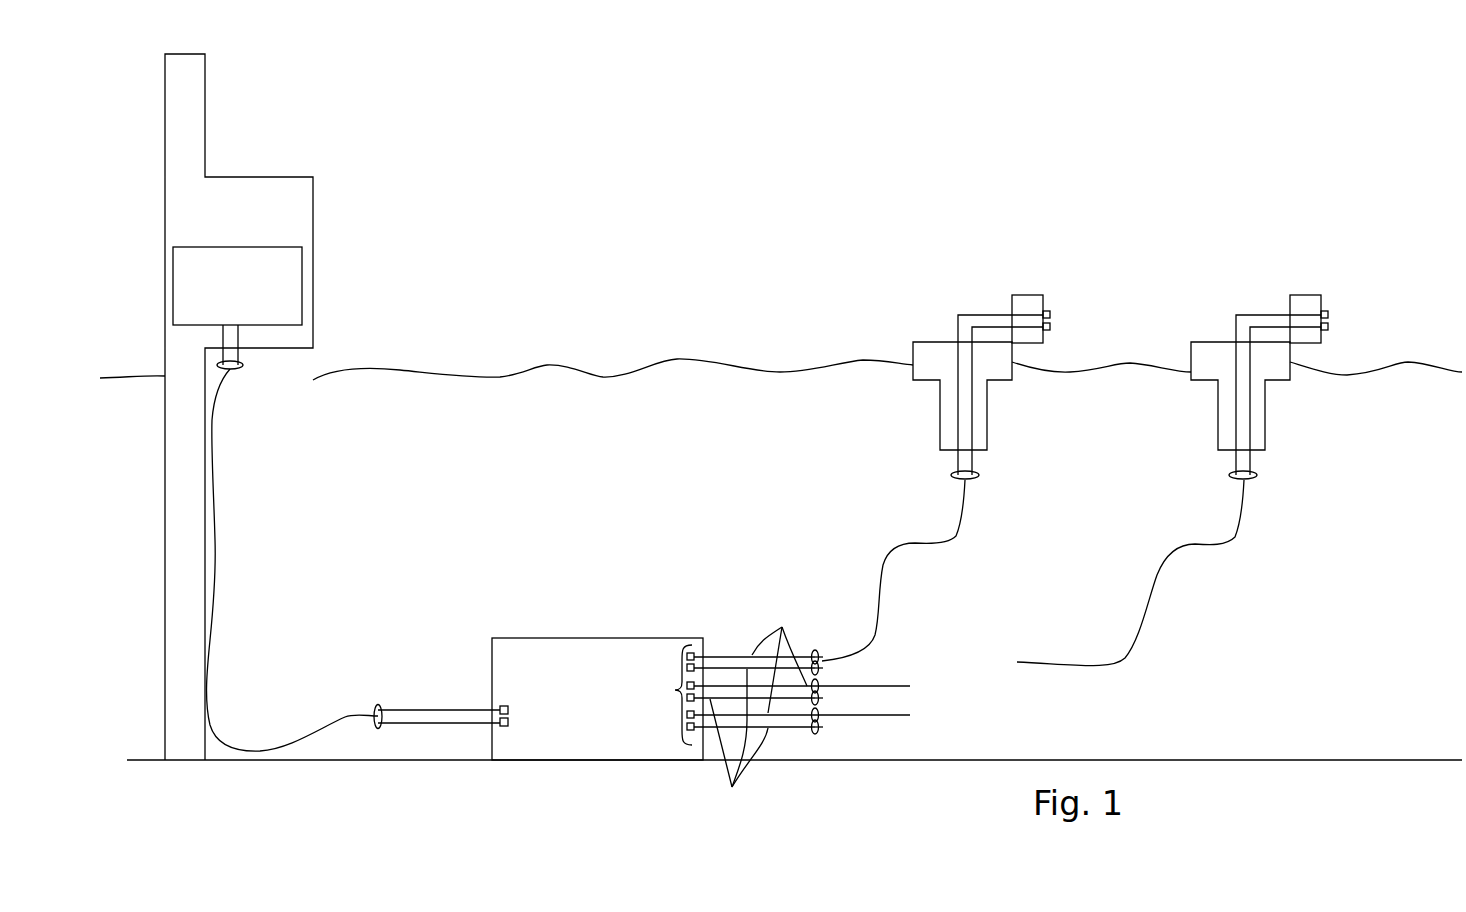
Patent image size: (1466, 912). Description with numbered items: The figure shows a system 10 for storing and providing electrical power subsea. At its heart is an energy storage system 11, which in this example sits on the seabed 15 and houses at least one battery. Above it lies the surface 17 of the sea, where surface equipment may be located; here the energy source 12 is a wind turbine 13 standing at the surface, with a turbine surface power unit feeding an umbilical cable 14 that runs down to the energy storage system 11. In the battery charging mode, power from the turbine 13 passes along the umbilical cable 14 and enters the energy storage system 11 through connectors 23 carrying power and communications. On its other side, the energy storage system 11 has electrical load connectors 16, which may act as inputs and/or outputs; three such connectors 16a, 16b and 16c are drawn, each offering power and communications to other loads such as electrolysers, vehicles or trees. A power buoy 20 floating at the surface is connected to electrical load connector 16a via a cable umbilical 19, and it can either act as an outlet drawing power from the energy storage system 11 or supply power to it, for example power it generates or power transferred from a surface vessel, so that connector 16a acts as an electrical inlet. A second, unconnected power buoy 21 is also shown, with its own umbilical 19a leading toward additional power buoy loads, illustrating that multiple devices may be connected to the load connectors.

The system 10 is at (1272, 182).
The energy storage system 11 is at (566, 762).
The energy source 12 is at (174, 262).
The wind turbine 13 is at (192, 130).
The umbilical cable 14 is at (215, 594).
The seabed 15 is at (1278, 760).
The electrical load connector 16 is at (675, 690).
The electrical load connector 16a is at (822, 663).
The electrical load connector 16b is at (822, 698).
The electrical load connector 16c is at (822, 727).
The surface of the sea 17 is at (525, 364).
The cable umbilical 19 is at (957, 536).
The additional power buoy umbilical 19a is at (1234, 538).
The power buoy 20 is at (918, 347).
The second power buoy 21 is at (1204, 347).
The connectors 23 is at (483, 723).